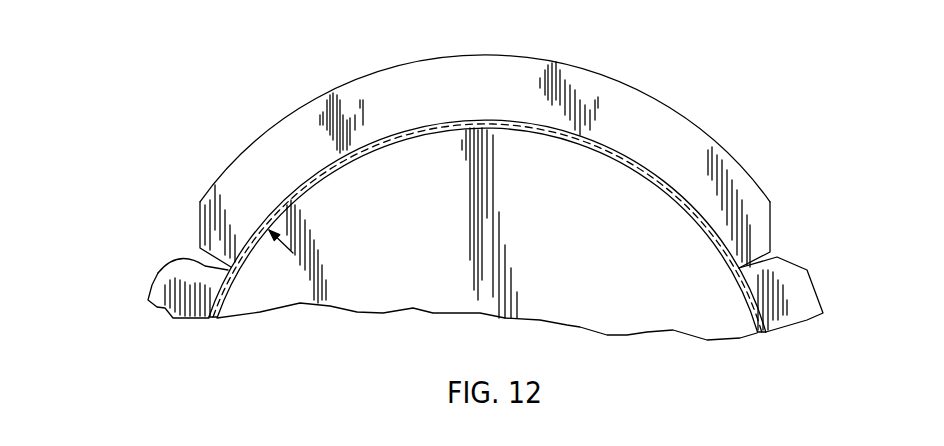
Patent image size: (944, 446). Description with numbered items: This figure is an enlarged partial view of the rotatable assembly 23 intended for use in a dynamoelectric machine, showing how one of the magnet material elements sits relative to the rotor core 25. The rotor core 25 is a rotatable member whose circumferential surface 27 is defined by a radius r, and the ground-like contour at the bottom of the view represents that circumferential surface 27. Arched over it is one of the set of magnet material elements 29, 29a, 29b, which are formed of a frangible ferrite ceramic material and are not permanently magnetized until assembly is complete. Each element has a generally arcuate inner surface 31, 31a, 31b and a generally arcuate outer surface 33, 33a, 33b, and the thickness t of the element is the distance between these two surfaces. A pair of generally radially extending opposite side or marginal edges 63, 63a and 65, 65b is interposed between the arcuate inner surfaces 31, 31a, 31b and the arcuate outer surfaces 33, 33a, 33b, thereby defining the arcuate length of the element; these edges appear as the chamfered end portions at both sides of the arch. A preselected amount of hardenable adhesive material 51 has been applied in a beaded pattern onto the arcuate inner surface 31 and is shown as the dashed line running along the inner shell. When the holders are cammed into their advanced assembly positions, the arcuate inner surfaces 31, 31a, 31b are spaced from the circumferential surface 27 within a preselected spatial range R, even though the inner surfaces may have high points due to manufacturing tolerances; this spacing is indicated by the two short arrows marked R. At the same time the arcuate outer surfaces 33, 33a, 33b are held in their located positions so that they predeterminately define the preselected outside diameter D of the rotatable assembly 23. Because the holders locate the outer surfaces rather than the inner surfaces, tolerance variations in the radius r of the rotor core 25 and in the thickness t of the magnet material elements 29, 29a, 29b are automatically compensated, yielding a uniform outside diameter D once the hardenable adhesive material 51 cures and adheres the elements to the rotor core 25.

The rotatable assembly 23 is at (632, 63).
The rotor core 25 is at (481, 256).
The circumferential surface 27 is at (387, 139).
The magnet material element 29 is at (438, 67).
The magnet material element 29a is at (797, 307).
The magnet material element 29b is at (185, 305).
The arcuate inner surface 31 is at (317, 184).
The arcuate inner surface 31a is at (748, 303).
The arcuate inner surface 31b is at (225, 298).
The arcuate outer surface 33 is at (268, 130).
The arcuate outer surface 33a is at (818, 294).
The arcuate outer surface 33b is at (150, 292).
The hardenable adhesive material 51 is at (500, 130).
The marginal edge 63 is at (204, 248).
The marginal edge 63a is at (772, 263).
The marginal edge 65 is at (760, 247).
The marginal edge 65b is at (172, 270).
The outside diameter D is at (357, 78).
The thickness t is at (209, 187).
The preselected spatial range R is at (614, 116).
The radius r is at (430, 312).